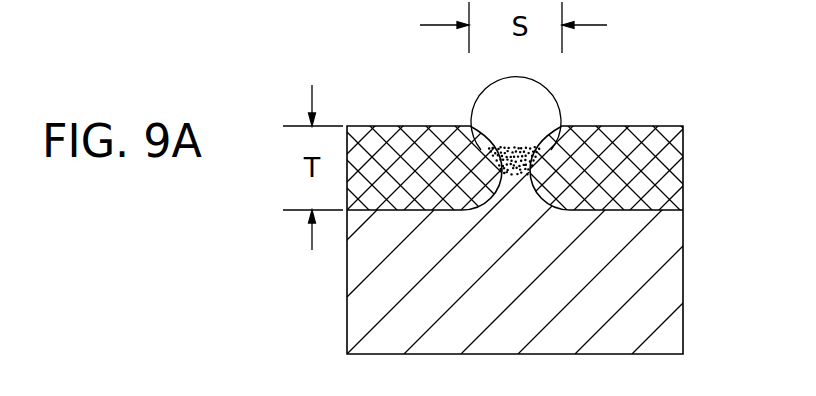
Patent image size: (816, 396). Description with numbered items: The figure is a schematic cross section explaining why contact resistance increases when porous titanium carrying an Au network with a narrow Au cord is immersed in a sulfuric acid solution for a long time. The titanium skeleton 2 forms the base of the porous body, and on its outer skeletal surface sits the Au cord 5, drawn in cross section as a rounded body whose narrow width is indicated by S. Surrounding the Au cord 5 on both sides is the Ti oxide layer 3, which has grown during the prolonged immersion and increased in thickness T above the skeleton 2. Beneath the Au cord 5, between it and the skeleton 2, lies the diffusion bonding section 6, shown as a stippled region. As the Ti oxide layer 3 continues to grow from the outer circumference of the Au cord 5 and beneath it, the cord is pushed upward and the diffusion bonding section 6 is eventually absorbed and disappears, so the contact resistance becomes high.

The skeleton 2 is at (655, 283).
The Ti oxide layer 3 is at (650, 171).
The Au cord 5 is at (543, 107).
The diffusion bonding section 6 is at (505, 148).